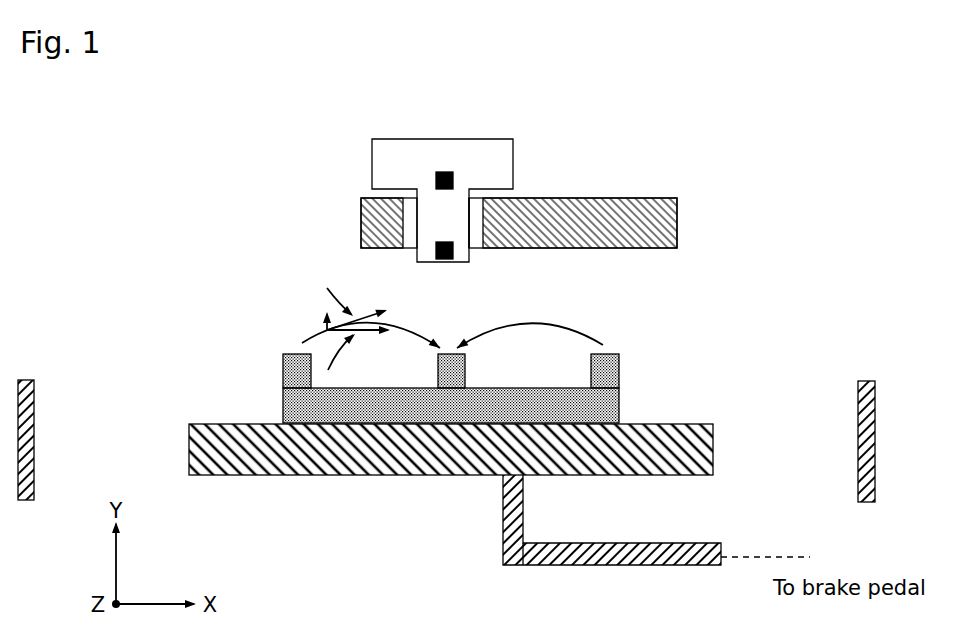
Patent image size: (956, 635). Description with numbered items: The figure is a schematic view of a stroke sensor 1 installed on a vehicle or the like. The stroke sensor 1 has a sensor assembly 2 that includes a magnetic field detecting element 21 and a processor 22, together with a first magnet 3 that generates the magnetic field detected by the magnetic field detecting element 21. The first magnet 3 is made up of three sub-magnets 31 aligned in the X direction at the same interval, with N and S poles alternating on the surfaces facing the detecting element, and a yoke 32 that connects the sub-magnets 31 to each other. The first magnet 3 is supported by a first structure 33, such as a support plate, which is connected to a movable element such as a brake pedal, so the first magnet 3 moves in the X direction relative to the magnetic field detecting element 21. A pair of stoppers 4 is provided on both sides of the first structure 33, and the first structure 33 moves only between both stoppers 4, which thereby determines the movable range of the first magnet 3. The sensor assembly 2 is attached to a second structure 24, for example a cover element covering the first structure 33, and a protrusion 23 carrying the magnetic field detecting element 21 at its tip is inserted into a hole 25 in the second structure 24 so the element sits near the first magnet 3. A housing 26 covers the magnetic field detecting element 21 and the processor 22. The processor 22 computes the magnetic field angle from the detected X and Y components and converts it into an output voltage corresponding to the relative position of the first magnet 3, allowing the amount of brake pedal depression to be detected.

The stroke sensor 1 is at (262, 234).
The sensor assembly 2 is at (391, 132).
The first magnet 3 is at (264, 342).
The stoppers 4 is at (26, 380).
The magnetic field detecting element 21 is at (444, 262).
The processor 22 is at (445, 172).
The protrusion 23 is at (428, 223).
The second structure 24 is at (597, 198).
The hole 25 is at (478, 228).
The housing 26 is at (492, 139).
The sub-magnets 31 is at (283, 375).
The yoke 32 is at (283, 405).
The first structure 33 is at (705, 424).